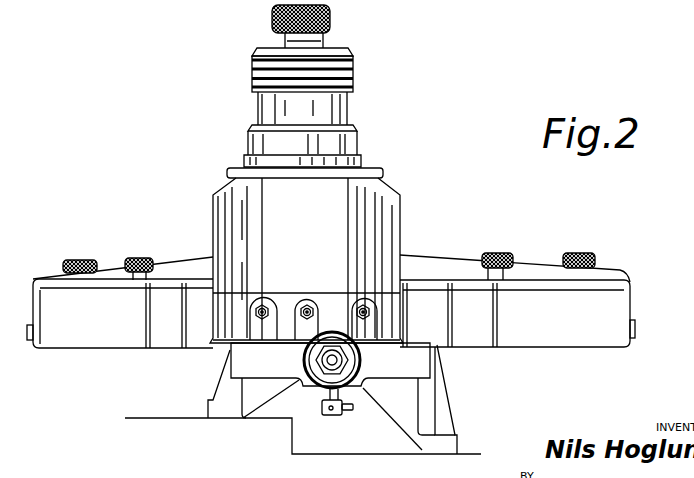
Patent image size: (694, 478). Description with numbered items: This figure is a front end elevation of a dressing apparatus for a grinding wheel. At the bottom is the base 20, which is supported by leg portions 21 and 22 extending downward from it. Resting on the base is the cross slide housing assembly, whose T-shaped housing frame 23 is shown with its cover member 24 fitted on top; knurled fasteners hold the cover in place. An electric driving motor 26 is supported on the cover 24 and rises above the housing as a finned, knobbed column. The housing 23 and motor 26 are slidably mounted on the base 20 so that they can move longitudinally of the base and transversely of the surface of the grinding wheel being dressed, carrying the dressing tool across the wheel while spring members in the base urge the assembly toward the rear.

The base 20 is at (422, 363).
The leg portion 21 is at (437, 413).
The leg portion 22 is at (223, 383).
The T-shaped housing frame 23 is at (633, 312).
The cover member 24 is at (600, 273).
The electric driving motor 26 is at (350, 116).